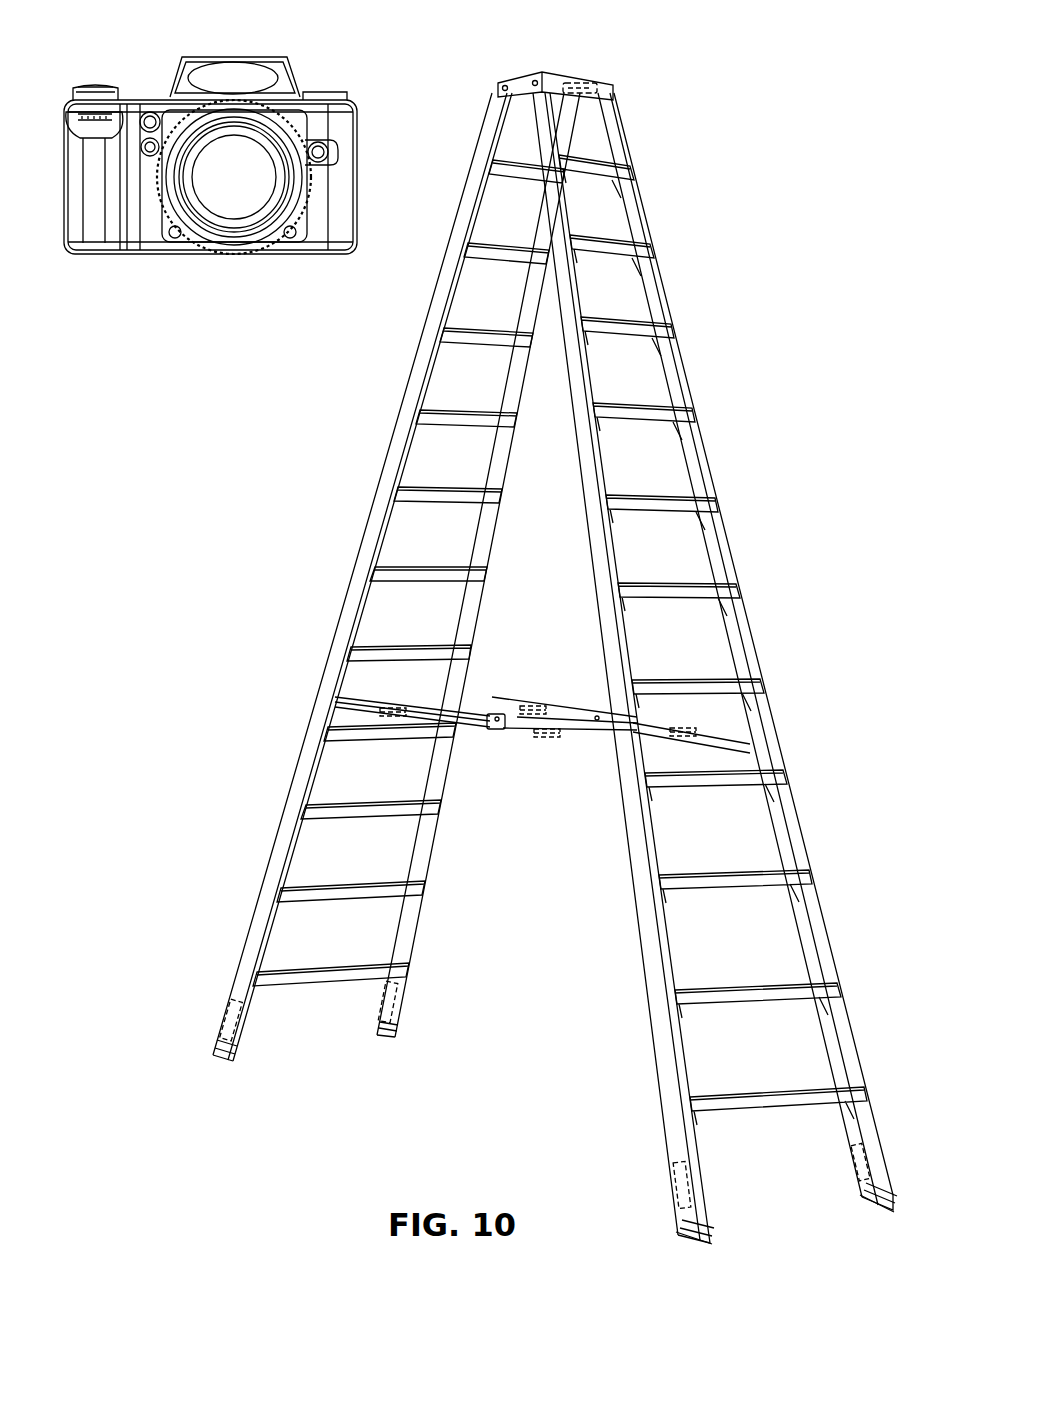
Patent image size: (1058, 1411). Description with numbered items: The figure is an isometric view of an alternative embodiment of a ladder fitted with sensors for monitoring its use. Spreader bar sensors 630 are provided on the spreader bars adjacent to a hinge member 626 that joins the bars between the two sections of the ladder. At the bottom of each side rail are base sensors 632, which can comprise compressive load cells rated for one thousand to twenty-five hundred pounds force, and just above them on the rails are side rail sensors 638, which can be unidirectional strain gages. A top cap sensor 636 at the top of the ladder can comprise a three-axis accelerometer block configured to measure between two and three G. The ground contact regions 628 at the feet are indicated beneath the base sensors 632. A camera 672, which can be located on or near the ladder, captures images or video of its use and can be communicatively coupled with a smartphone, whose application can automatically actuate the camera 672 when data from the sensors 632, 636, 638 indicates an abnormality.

The camera 672 is at (240, 56).
The top cap sensor 636 is at (615, 88).
The hinge member 626 is at (490, 732).
The spreader bar sensors 630 is at (533, 705).
The side rail sensors 638 is at (238, 988).
The base sensors 632 is at (220, 1064).
The ground contact point 628 is at (703, 1225).